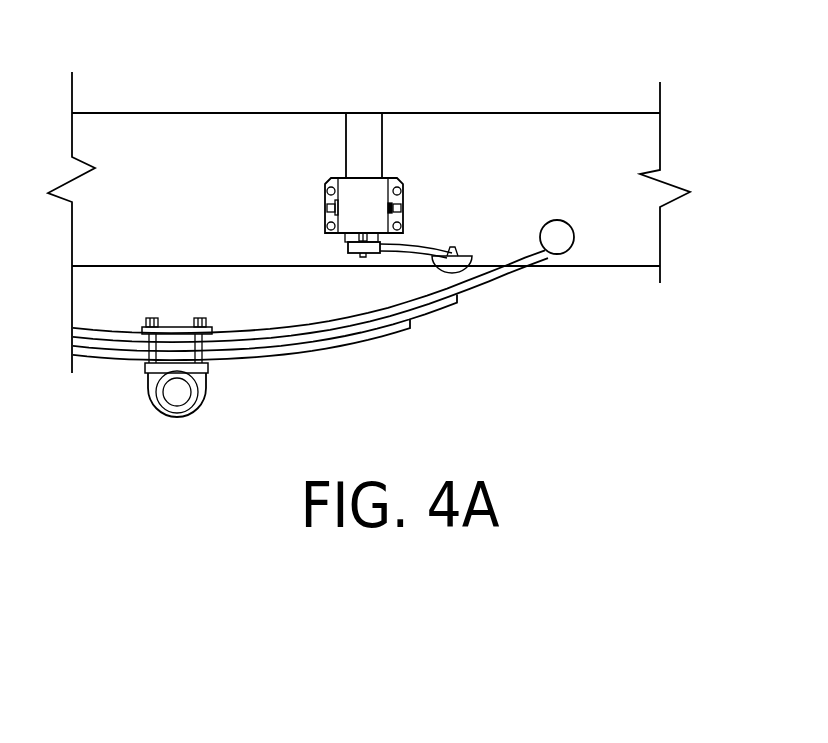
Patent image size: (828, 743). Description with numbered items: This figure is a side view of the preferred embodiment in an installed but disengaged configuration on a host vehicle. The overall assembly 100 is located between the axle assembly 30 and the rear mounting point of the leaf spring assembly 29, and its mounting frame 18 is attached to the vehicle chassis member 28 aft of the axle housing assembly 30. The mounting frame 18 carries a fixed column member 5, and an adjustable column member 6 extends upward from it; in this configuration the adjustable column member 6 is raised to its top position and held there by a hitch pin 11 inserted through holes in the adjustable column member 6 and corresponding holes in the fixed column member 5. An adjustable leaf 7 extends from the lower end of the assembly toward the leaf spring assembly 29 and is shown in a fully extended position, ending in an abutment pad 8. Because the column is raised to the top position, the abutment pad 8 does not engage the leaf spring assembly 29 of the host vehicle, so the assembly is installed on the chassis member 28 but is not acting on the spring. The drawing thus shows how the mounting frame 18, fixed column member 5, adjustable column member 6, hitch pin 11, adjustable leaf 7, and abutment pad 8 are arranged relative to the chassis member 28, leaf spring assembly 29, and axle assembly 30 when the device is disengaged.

The overall assembly 100 is at (369, 191).
The adjustable column member 6 is at (358, 137).
The chassis member 28 is at (422, 138).
The mounting frame 18 is at (325, 182).
The hitch pin 11 is at (402, 201).
The fixed column member 5 is at (359, 197).
The adjustable leaf 7 is at (487, 212).
The abutment pad 8 is at (460, 257).
The leaf spring assembly 29 is at (292, 343).
The axle assembly 30 is at (183, 395).